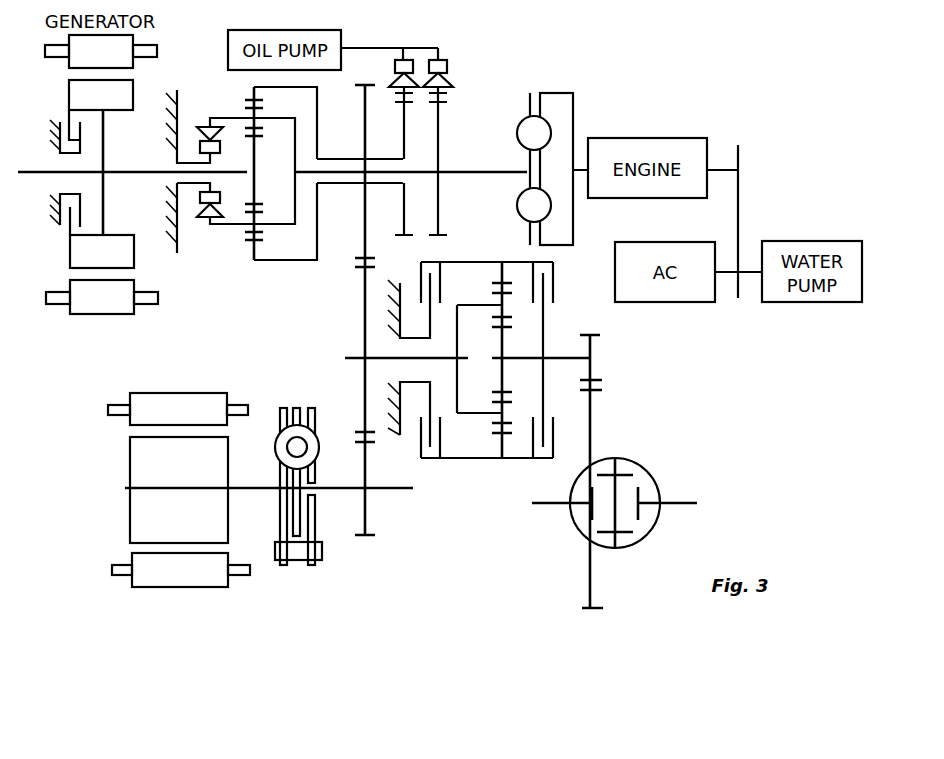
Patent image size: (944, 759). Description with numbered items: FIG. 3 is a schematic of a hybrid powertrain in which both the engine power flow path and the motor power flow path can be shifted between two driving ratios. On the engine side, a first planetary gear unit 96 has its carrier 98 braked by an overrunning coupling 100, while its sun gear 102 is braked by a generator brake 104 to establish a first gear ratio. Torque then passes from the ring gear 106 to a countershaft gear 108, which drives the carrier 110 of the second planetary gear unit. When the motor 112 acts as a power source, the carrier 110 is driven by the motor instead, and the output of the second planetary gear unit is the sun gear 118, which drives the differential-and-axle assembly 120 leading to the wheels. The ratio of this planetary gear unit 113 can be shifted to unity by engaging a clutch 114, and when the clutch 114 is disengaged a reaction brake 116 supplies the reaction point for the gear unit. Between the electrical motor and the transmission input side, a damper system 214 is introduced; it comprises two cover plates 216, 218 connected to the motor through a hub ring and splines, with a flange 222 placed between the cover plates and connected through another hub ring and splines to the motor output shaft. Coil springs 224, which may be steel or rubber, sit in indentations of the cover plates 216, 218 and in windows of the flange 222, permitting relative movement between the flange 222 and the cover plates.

The first planetary gear unit 96 is at (219, 112).
The carrier 98 is at (186, 249).
The overrunning coupling 100 is at (198, 197).
The sun gear 102 is at (257, 158).
The generator brake 104 is at (80, 140).
The ring gear 106 is at (303, 173).
The countershaft gear 108 is at (365, 309).
The carrier 110 is at (533, 383).
The motor 112 is at (142, 516).
The planetary gear unit 113 is at (452, 462).
The clutch 114 is at (553, 285).
The reaction brake 116 is at (440, 290).
The sun gear 118 is at (500, 347).
The differential-and-axle assembly 120 is at (650, 472).
The damper system 214 is at (302, 522).
The cover plate 216 is at (316, 533).
The cover plate 218 is at (280, 535).
The flange 222 is at (293, 536).
The coil springs 224 is at (273, 445).